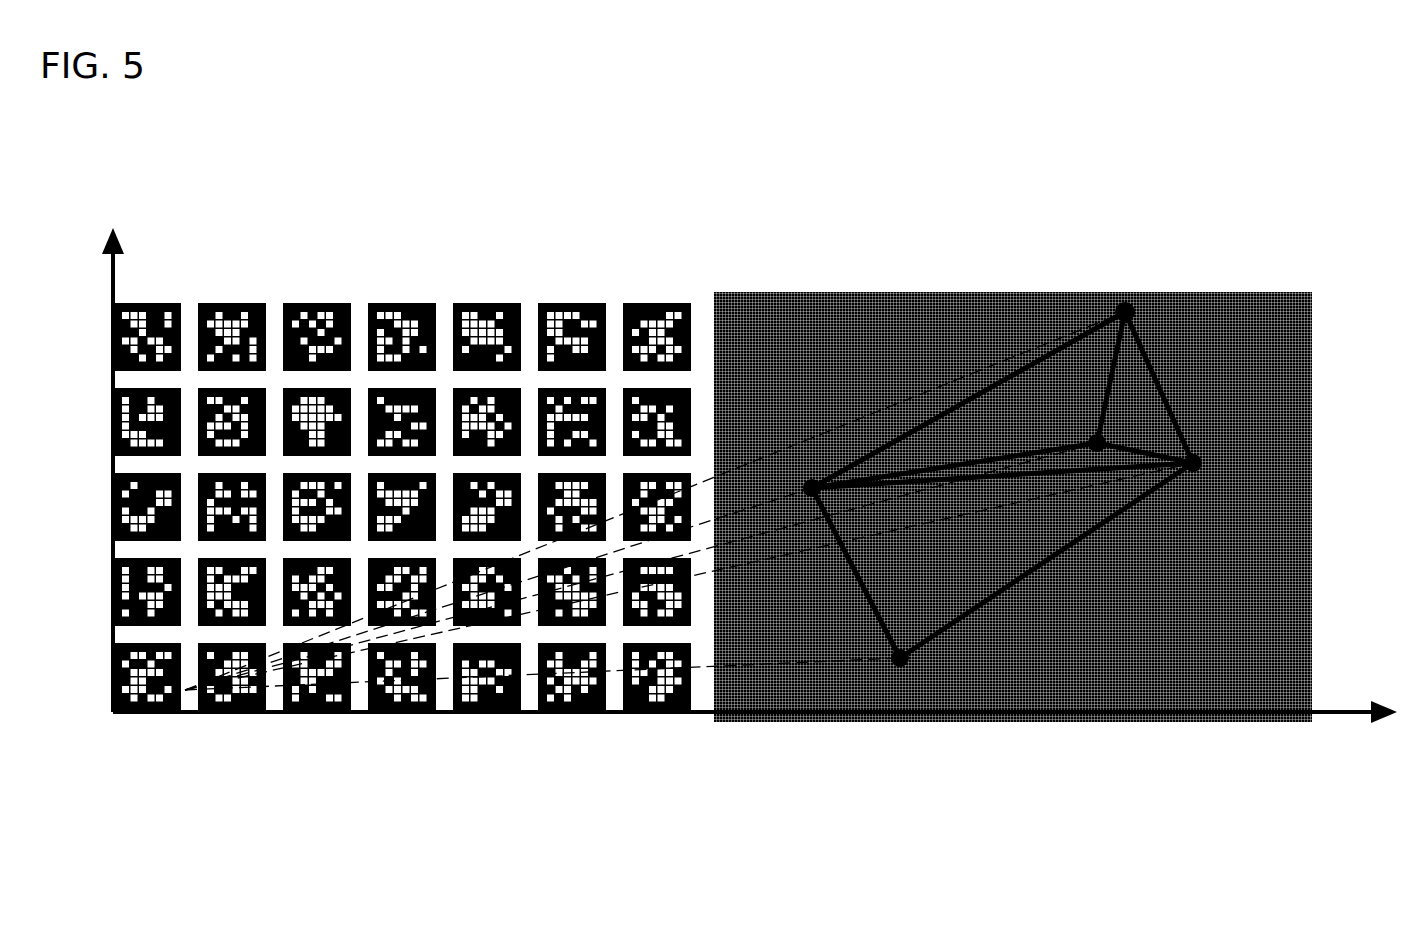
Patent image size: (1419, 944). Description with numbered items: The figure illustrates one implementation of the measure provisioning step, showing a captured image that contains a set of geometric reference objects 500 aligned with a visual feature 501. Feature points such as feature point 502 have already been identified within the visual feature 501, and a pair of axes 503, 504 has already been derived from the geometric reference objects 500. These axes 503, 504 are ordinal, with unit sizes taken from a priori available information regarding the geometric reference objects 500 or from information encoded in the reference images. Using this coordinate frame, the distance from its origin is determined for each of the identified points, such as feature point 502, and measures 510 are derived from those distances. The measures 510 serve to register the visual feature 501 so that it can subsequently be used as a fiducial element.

The geometric reference objects 500 is at (681, 724).
The visual feature 501 is at (1303, 724).
The feature point 502 is at (1127, 303).
The axis 503 is at (756, 736).
The axis 504 is at (96, 456).
The measures 510 is at (995, 388).